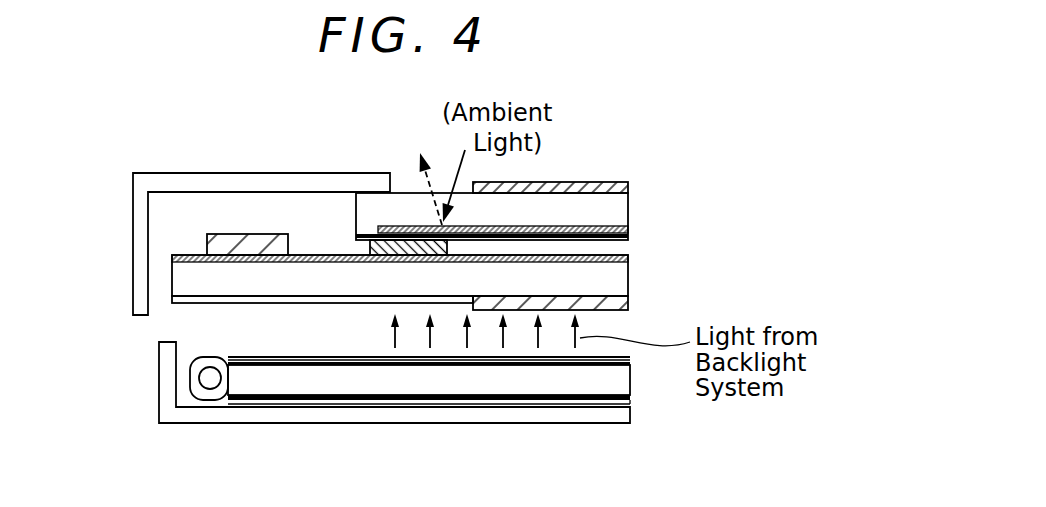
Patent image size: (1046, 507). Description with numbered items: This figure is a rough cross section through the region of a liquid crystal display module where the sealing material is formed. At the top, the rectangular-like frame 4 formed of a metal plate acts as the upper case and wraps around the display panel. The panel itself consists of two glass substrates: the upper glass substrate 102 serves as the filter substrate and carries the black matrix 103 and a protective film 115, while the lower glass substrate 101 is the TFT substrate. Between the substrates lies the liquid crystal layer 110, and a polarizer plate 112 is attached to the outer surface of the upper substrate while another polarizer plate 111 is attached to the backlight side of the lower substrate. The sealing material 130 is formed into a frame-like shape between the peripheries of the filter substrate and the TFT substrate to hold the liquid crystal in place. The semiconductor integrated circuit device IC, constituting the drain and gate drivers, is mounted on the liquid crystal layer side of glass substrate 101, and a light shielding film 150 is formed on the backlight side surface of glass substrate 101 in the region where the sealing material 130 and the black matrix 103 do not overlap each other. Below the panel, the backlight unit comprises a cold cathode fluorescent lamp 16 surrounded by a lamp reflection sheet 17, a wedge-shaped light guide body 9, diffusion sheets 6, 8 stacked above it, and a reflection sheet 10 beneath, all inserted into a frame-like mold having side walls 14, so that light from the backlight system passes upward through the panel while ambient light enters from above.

The frame 4 is at (142, 200).
The semiconductor integrated circuit device IC is at (222, 240).
The sealing material 130 is at (368, 247).
The polarizer plate 112 is at (629, 183).
The glass substrate 102 is at (629, 207).
The black matrix 103 is at (630, 230).
The protective film 115 is at (630, 236).
The liquid crystal layer 110 is at (621, 245).
The glass substrate 101 is at (629, 275).
The polarizer plate 111 is at (629, 300).
The light shielding film 150 is at (173, 300).
The lamp reflection sheet 17 is at (193, 370).
The cold cathode fluorescent lamp 16 is at (197, 393).
The side walls of the mold 14 is at (612, 415).
The reflection sheet 10 is at (632, 403).
The light guide body 9 is at (625, 382).
The diffusion sheet 6 is at (628, 360).
The diffusion sheet 8 is at (429, 363).